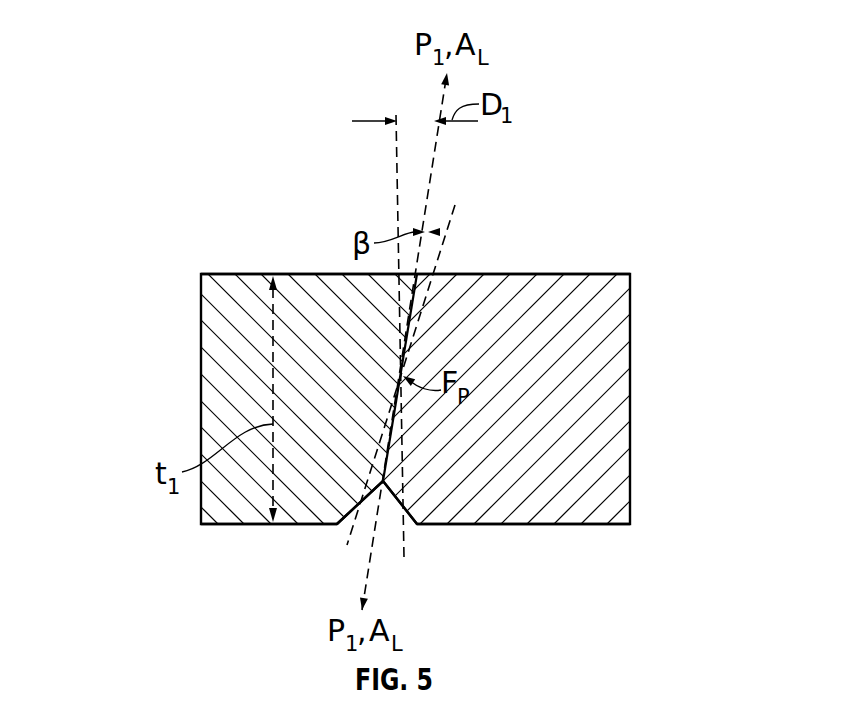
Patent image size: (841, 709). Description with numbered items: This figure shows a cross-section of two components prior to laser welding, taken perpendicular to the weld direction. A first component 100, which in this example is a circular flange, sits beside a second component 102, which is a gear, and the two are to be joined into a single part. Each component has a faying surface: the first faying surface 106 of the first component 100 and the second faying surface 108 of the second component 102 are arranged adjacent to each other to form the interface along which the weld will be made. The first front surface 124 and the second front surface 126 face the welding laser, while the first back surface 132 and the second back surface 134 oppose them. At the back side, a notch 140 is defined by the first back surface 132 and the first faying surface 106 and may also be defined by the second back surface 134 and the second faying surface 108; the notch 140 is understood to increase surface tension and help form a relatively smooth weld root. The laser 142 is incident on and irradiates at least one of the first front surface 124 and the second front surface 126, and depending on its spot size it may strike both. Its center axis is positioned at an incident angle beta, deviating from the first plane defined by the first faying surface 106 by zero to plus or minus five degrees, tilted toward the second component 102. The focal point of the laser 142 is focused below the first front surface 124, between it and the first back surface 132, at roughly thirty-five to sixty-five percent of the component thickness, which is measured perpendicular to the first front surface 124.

The first component 100 is at (632, 386).
The second component 102 is at (200, 370).
The first faying surface 106 is at (393, 436).
The second faying surface 108 is at (404, 346).
The first front surface 124 is at (593, 273).
The second front surface 126 is at (221, 273).
The first back surface 132 is at (548, 525).
The second back surface 134 is at (248, 525).
The notch 140 is at (388, 516).
The laser 142 is at (446, 228).